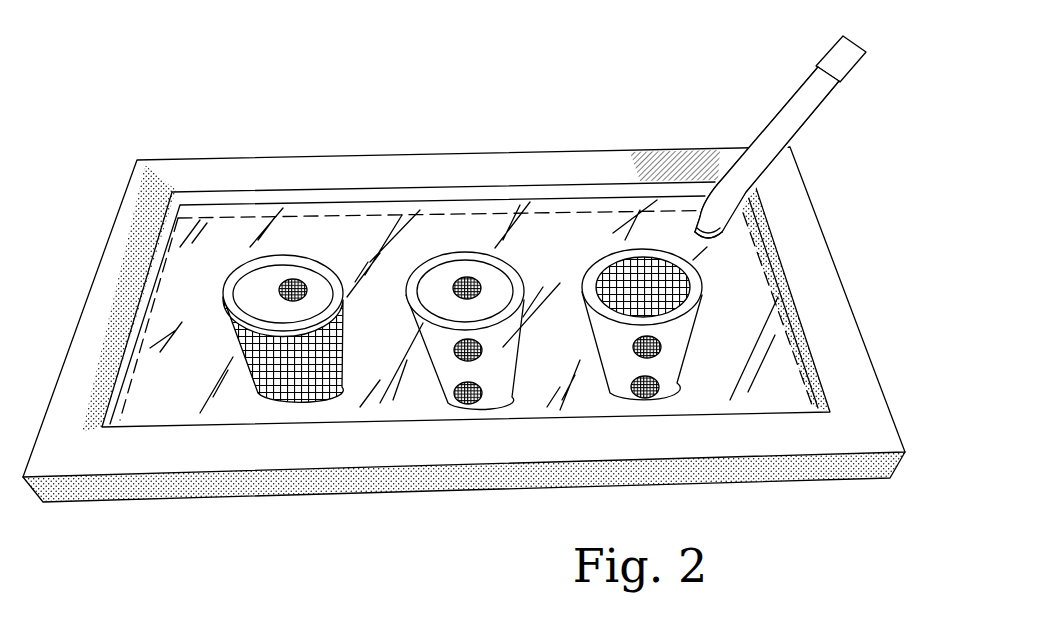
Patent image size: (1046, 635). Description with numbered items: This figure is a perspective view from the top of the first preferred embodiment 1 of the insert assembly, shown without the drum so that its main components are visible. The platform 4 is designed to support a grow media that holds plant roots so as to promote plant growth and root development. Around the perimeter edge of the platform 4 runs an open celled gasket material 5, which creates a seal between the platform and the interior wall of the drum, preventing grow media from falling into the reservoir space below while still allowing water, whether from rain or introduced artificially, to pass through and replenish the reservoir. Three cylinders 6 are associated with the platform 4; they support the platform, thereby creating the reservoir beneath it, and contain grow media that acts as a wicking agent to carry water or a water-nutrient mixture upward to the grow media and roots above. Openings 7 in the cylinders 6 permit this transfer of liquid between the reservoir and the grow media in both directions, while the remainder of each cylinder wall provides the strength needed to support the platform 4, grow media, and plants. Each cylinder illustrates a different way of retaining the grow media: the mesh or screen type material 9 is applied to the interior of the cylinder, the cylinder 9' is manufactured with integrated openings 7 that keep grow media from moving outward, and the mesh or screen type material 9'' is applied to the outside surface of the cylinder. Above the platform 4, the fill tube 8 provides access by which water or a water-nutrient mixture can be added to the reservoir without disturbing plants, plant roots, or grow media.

The first preferred embodiment 1 is at (347, 140).
The platform 4 is at (338, 403).
The open celled gasket material 5 is at (107, 465).
The cylinders 6 is at (445, 383).
The openings 7 is at (660, 343).
The fill tube 8 is at (792, 117).
The mesh or screen type material applied to the interior of the cylinder 9 is at (645, 185).
The cylinder with integrated openings 9' is at (468, 171).
The mesh or screen type material applied to the outside surface of cylinder 9'' is at (193, 312).